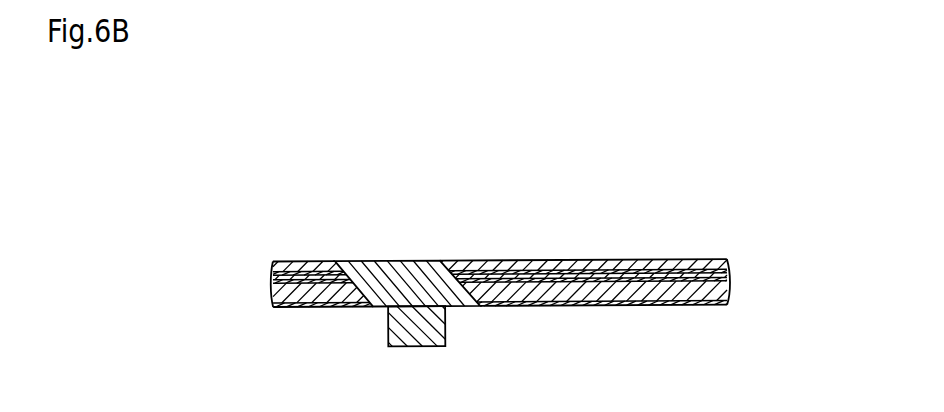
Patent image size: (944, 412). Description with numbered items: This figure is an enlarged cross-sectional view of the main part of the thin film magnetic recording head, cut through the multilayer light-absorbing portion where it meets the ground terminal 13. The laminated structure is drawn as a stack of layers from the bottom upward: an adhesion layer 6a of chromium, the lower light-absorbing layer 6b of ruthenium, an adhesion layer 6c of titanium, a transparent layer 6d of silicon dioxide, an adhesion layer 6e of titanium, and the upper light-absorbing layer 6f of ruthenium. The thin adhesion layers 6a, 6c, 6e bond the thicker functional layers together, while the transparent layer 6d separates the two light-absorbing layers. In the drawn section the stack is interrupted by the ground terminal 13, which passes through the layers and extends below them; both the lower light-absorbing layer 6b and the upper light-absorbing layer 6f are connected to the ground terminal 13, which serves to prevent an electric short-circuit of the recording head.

The ground terminal 13 is at (417, 323).
The adhesion layer 6a is at (672, 304).
The lower light-absorbing layer 6b is at (708, 294).
The adhesion layer 6c is at (730, 286).
The transparent layer 6d is at (730, 278).
The adhesion layer 6e is at (729, 270).
The upper light-absorbing layer 6f is at (678, 265).